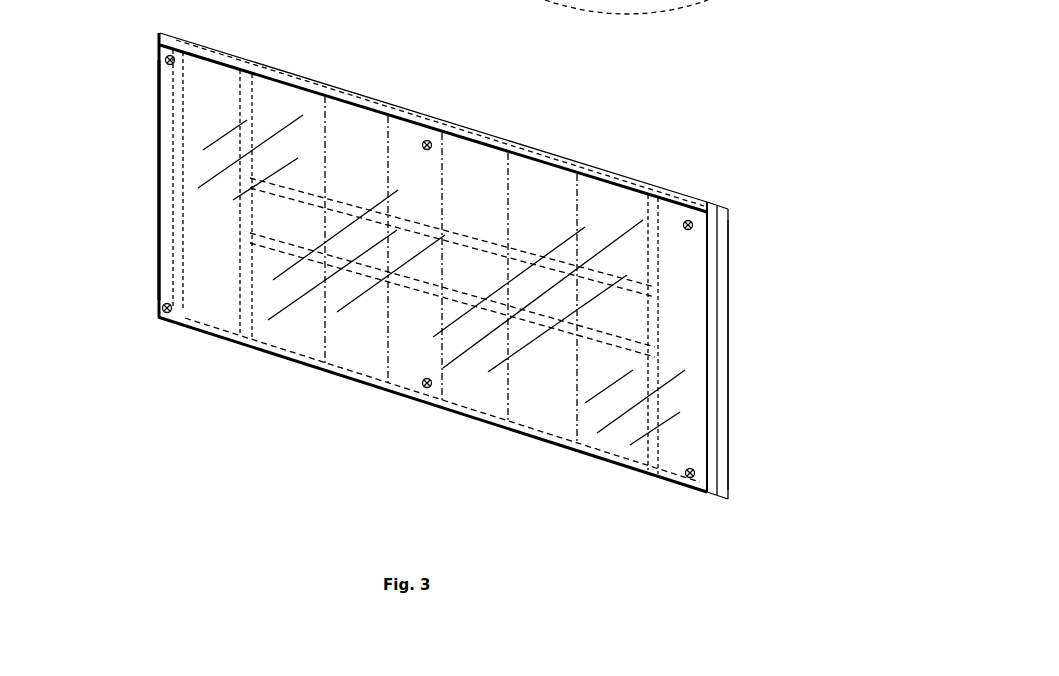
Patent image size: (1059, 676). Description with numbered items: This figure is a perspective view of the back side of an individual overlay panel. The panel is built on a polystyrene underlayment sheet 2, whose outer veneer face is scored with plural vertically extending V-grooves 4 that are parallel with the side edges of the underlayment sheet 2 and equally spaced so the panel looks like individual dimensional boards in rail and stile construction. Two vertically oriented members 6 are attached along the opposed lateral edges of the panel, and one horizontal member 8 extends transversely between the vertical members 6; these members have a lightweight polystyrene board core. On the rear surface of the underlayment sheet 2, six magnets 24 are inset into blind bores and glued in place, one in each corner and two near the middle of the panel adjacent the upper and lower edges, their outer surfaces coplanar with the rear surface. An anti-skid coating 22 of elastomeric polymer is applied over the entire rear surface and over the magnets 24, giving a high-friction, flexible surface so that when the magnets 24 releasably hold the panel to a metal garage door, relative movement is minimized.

The anti-skid coating 22 is at (157, 108).
The vertical member 6 is at (215, 173).
The V-groove 4 is at (327, 96).
The underlayment sheet 2 is at (620, 217).
The horizontal member 8 is at (463, 265).
The magnet 24 is at (167, 57).